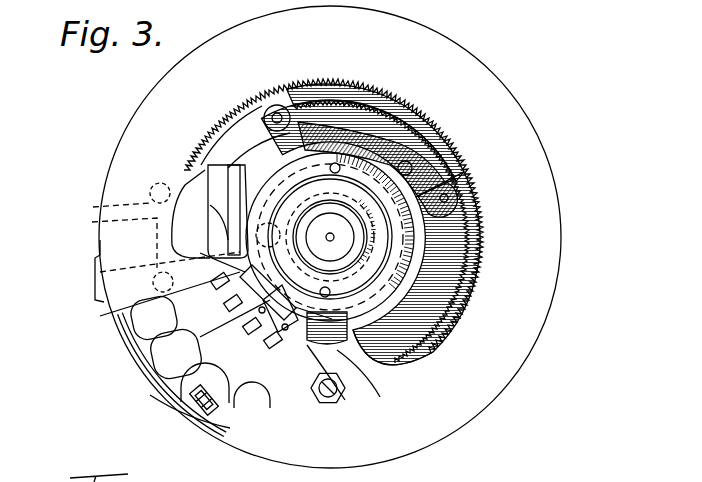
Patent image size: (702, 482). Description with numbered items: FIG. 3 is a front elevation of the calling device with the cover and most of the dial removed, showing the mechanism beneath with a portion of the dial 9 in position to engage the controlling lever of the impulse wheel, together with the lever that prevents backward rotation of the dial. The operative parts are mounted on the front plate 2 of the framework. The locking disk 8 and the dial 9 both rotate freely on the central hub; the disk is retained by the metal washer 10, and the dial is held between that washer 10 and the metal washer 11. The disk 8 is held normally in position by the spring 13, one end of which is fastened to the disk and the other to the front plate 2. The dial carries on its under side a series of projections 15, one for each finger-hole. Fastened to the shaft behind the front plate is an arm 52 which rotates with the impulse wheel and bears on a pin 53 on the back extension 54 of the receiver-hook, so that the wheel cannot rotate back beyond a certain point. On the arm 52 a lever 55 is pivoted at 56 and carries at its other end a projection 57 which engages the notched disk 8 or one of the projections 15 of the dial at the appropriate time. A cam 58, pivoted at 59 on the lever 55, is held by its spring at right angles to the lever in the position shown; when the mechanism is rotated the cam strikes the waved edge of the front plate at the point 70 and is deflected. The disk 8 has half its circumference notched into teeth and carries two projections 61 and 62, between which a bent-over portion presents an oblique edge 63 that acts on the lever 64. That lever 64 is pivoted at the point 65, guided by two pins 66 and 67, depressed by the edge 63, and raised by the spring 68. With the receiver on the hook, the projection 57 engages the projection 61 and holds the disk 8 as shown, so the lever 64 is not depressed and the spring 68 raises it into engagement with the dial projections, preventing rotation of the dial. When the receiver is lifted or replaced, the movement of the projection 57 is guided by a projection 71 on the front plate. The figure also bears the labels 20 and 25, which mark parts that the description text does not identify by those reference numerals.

The front plate 2 is at (516, 378).
The locking disk 8 is at (420, 343).
The dial 9 is at (135, 331).
The metal washer 10 is at (268, 290).
The metal washer 11 is at (281, 307).
The spring 13 is at (470, 262).
The projections 15 is at (258, 343).
The inner gear ring 20 is at (446, 308).
The pivot 25 is at (150, 193).
The arm 52 is at (402, 140).
The pin 53 is at (448, 184).
The back extension 54 is at (462, 196).
The lever 55 is at (186, 101).
The pivot 56 is at (280, 112).
The projection 57 is at (118, 310).
The cam 58 is at (190, 183).
The pivot 59 is at (228, 168).
The projection 61 is at (150, 348).
The projection 62 is at (350, 348).
The oblique edge 63 is at (347, 385).
The lever 64 is at (252, 418).
The pivot point 65 is at (210, 420).
The pin 66 is at (185, 372).
The pin 67 is at (326, 406).
The spring 68 is at (160, 400).
The point 70 is at (232, 115).
The projection 71 is at (110, 286).